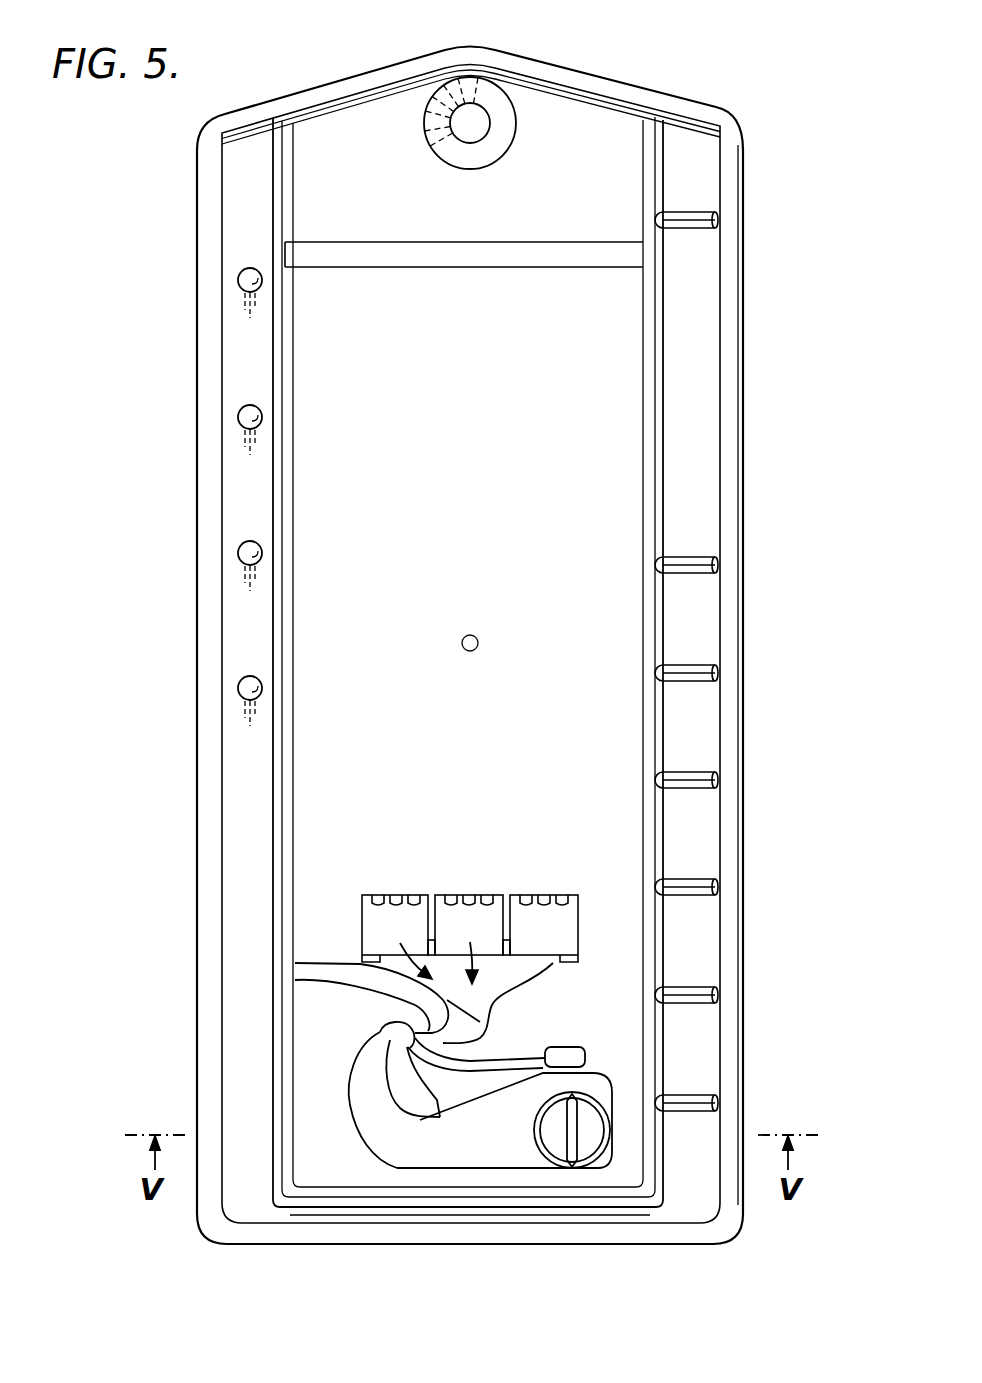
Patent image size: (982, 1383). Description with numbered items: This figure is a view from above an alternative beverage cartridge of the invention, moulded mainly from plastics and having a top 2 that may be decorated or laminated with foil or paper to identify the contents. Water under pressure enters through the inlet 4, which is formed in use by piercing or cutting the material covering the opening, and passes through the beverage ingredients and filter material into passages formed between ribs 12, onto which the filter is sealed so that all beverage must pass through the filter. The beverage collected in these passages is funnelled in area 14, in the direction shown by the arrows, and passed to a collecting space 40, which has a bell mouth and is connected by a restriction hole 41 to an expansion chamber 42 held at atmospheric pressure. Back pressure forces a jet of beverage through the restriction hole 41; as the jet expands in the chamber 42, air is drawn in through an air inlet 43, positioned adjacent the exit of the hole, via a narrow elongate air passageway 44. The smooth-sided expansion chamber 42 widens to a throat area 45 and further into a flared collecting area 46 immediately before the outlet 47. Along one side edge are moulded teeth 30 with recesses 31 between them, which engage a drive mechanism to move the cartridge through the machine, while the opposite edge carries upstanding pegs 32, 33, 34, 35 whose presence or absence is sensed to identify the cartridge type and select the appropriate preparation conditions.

The top 2 is at (605, 400).
The inlet 4 is at (478, 110).
The ribs 12 is at (497, 920).
The area 14 is at (318, 965).
The teeth 30 is at (717, 566).
The recesses 31 is at (697, 630).
The peg 32 is at (238, 280).
The peg 33 is at (238, 417).
The peg 34 is at (238, 553).
The peg 35 is at (238, 688).
The collecting space 40 is at (470, 1022).
The restriction hole 41 is at (390, 1000).
The expansion chamber 42 is at (380, 1034).
The air inlet 43 is at (585, 1057).
The air passageway 44 is at (443, 1040).
The throat area 45 is at (368, 1112).
The flared collecting area 46 is at (490, 1160).
The outlet 47 is at (592, 1142).